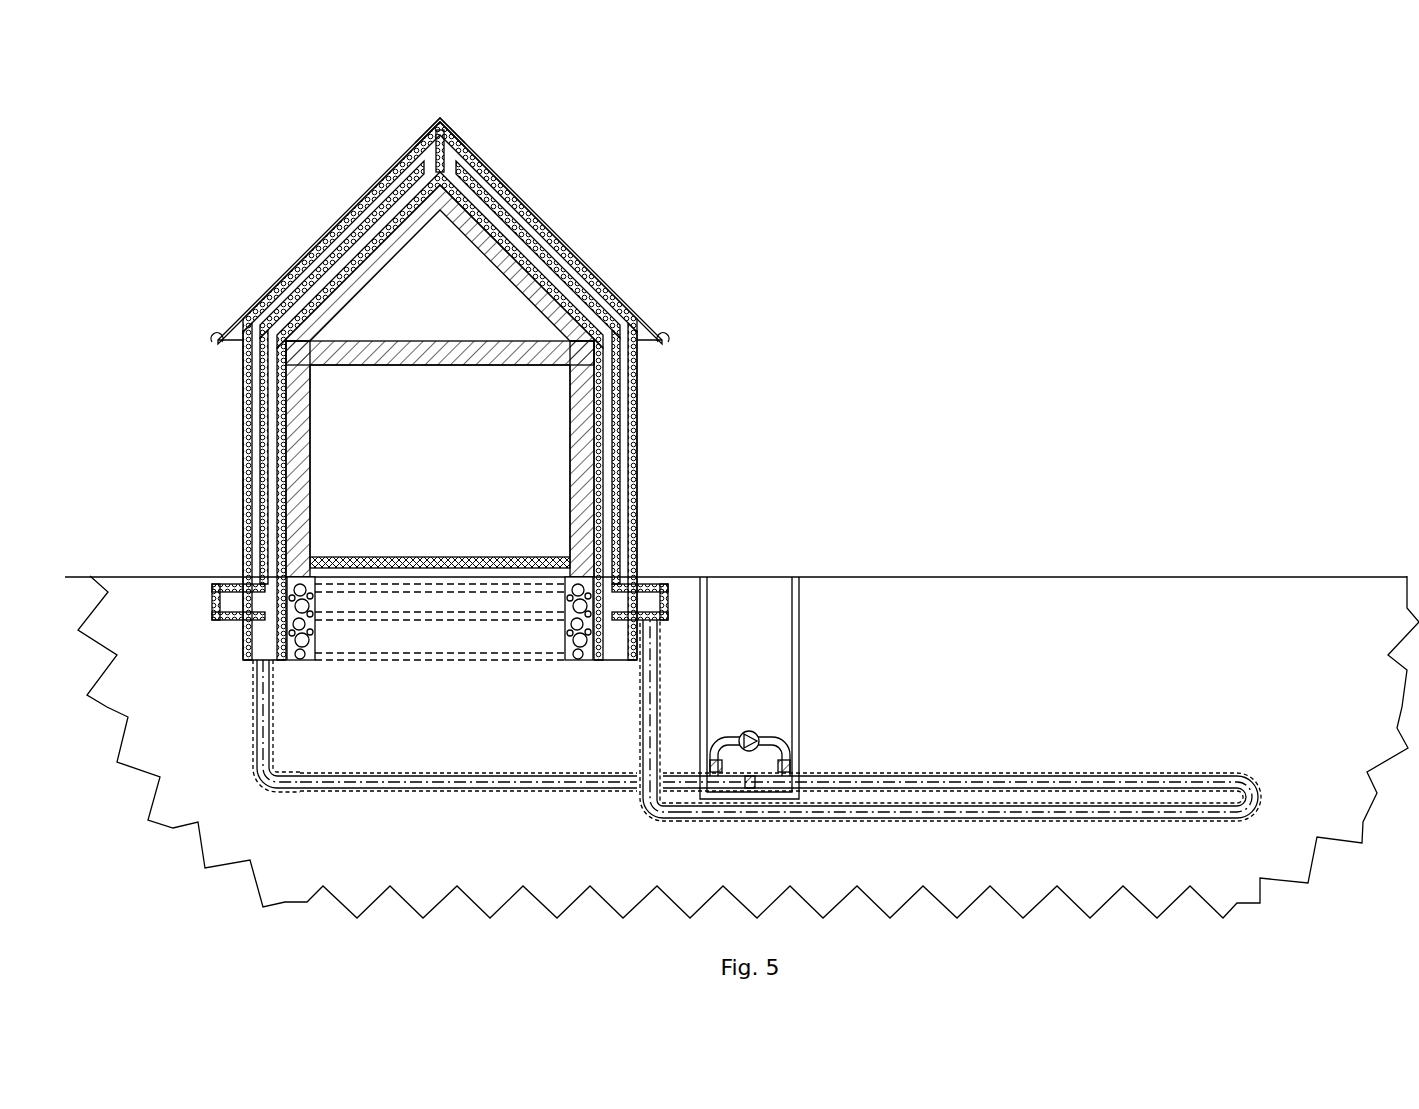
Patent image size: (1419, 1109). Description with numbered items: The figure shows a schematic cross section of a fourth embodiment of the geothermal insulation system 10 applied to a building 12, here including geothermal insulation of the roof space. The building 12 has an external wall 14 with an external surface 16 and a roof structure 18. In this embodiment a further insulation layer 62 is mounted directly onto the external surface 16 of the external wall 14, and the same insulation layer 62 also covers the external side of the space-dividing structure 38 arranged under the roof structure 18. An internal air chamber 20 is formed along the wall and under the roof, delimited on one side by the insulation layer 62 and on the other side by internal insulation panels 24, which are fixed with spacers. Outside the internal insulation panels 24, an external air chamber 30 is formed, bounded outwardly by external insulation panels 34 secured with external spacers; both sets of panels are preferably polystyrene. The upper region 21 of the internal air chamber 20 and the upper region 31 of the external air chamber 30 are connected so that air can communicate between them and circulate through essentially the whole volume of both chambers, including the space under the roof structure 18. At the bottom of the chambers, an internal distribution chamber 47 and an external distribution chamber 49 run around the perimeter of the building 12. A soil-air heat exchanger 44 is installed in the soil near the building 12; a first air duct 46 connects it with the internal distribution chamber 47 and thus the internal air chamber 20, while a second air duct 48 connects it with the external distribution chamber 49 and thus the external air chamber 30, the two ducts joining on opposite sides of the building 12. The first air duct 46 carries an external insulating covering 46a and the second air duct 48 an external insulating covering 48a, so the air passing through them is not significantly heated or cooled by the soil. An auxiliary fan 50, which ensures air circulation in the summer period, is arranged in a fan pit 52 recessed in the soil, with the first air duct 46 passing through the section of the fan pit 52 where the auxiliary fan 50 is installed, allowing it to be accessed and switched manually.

The geothermal insulation system 10 is at (827, 335).
The building 12 is at (427, 418).
The external wall 14 is at (297, 473).
The external surface 16 is at (286, 447).
The roof structure 18 is at (526, 200).
The internal air chamber 20 is at (335, 265).
The upper region of the internal air chamber 21 is at (423, 168).
The internal insulation panels 24 is at (348, 232).
The external air chamber 30 is at (258, 307).
The upper region of the external air chamber 31 is at (420, 140).
The external insulation panels 34 is at (250, 305).
The space-dividing structure 38 is at (463, 248).
The soil-air heat exchanger 44 is at (1035, 778).
The first air duct 46 is at (263, 712).
The external insulating covering 46a is at (253, 743).
The internal distribution chamber 47 is at (260, 632).
The second air duct 48 is at (650, 750).
The external insulating covering 48a is at (638, 760).
The external distribution chamber 49 is at (235, 598).
The auxiliary fan 50 is at (748, 731).
The fan pit 52 is at (731, 610).
The insulation layer 62 is at (548, 290).